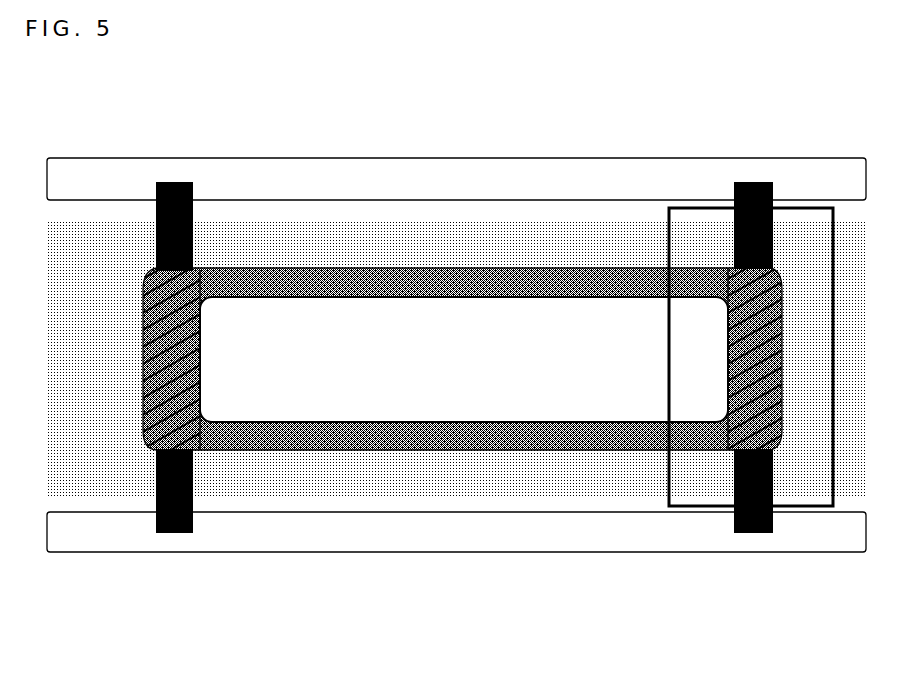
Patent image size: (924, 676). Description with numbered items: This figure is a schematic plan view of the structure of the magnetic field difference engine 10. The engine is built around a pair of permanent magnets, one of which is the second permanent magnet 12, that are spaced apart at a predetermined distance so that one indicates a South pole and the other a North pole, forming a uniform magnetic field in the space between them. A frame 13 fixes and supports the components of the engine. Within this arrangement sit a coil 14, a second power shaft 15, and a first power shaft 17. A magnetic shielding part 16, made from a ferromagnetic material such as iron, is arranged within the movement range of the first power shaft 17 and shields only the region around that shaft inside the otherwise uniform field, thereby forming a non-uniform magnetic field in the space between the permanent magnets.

The magnetic field difference engine 10 is at (93, 78).
The second permanent magnet 12 is at (113, 389).
The frame 13 is at (408, 158).
The coil 14 is at (541, 290).
The second power shaft 15 is at (178, 184).
The magnetic shielding part 16 is at (667, 482).
The first power shaft 17 is at (757, 532).